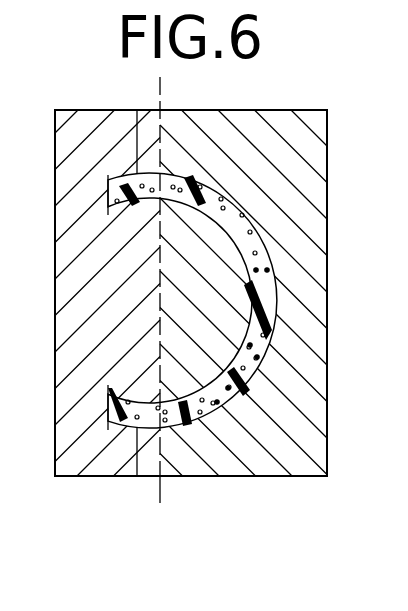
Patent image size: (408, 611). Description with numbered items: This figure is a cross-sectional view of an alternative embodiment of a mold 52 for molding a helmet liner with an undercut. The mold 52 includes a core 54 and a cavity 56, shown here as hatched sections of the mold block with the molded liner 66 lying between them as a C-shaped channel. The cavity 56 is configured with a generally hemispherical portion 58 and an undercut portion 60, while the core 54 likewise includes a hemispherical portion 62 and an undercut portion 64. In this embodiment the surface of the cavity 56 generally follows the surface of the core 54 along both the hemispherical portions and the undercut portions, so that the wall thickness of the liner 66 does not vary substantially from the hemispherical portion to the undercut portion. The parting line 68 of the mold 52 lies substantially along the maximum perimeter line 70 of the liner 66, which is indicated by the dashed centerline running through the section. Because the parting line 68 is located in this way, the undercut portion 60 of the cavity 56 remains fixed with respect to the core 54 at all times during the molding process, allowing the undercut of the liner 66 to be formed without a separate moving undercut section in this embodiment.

The mold 52 is at (341, 79).
The core 54 is at (143, 243).
The cavity 56 is at (213, 130).
The hemispherical portion 58 is at (253, 457).
The undercut portion 60 is at (93, 450).
The hemispherical portion 62 is at (253, 285).
The undercut portion 64 is at (135, 300).
The liner 66 is at (240, 220).
The parting line 68 is at (160, 303).
The maximum perimeter line 70 is at (160, 503).